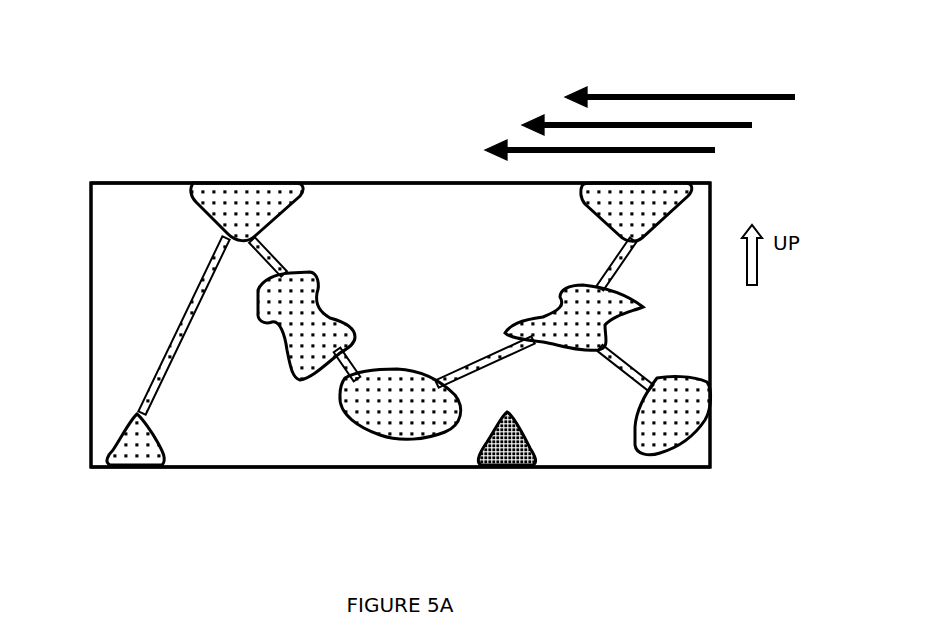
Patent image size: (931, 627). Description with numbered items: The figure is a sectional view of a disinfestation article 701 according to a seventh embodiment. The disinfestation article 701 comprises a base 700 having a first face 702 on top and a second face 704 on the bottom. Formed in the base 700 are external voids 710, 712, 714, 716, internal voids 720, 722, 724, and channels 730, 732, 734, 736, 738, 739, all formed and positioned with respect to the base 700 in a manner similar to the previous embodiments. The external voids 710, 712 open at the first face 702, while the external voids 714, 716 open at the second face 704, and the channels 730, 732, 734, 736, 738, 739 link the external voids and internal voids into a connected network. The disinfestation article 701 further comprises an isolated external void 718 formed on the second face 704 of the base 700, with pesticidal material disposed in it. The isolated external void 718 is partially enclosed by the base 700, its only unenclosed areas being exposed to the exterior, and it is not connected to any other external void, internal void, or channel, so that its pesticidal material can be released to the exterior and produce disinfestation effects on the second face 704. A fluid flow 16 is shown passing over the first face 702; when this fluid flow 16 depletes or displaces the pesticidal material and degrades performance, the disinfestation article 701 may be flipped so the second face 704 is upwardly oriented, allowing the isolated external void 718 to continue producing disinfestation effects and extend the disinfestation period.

The fluid flow 16 is at (642, 95).
The base 700 is at (152, 197).
The disinfestation article 701 is at (158, 70).
The first face 702 is at (425, 178).
The second face 704 is at (185, 466).
The external void 710 is at (272, 200).
The external void 712 is at (657, 197).
The external void 714 is at (126, 455).
The external void 716 is at (660, 440).
The isolated external void 718 is at (502, 460).
The internal void 720 is at (300, 340).
The internal void 722 is at (412, 430).
The internal void 724 is at (632, 342).
The channel 730 is at (273, 252).
The channel 732 is at (348, 370).
The channel 734 is at (160, 370).
The channel 736 is at (617, 265).
The channel 738 is at (628, 372).
The channel 739 is at (468, 383).